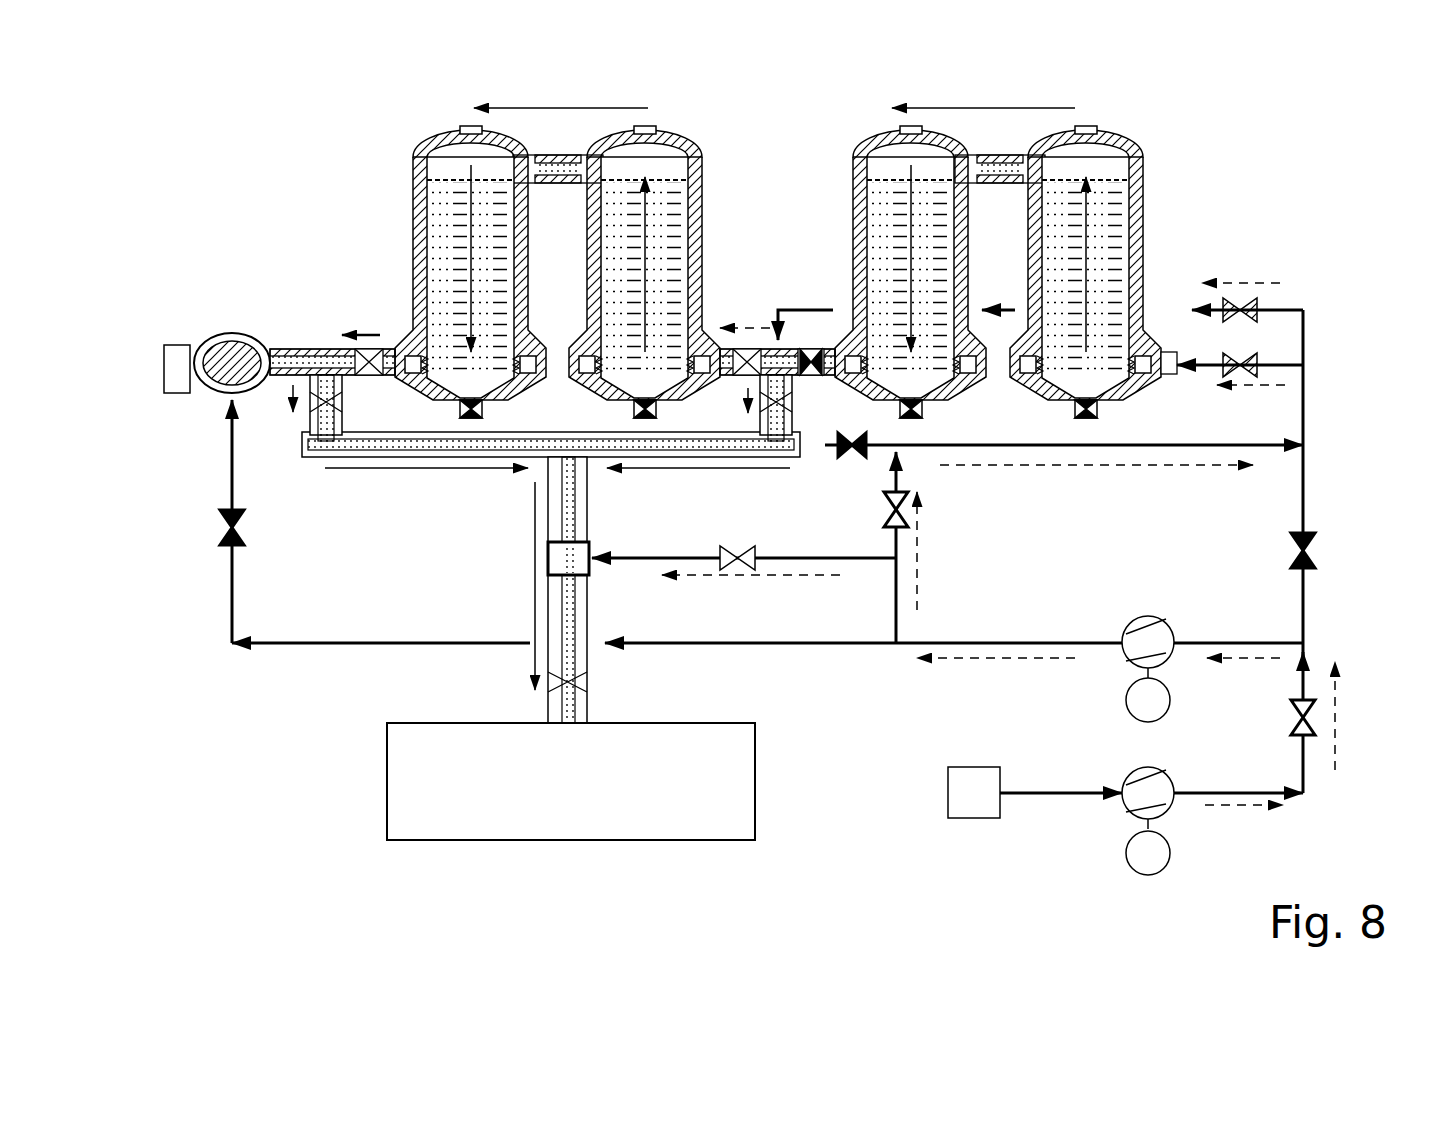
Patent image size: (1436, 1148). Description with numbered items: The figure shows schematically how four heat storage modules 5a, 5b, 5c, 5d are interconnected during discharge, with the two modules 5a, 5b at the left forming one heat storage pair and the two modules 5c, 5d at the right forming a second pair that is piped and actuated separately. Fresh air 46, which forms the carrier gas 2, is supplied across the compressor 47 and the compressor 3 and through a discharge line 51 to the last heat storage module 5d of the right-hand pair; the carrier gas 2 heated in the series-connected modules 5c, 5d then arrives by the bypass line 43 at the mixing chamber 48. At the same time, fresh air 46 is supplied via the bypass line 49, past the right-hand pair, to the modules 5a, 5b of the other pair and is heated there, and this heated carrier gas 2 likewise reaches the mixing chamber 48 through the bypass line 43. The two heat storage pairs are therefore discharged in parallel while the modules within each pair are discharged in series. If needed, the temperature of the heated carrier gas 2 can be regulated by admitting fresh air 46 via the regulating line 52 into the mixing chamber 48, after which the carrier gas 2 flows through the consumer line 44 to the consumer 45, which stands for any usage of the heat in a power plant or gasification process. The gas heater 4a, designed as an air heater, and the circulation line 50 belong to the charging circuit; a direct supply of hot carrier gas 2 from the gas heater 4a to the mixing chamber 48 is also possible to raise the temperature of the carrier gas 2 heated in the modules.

The carrier gas 2 is at (552, 107).
The compressor 3 is at (1130, 632).
The gas heater 4a is at (215, 336).
The heat storage module 5a is at (447, 205).
The heat storage module 5b is at (660, 186).
The heat storage module 5c is at (890, 208).
The heat storage module 5d is at (1102, 190).
The bypass line 43 is at (316, 460).
The consumer line 44 is at (548, 626).
The consumer 45 is at (425, 777).
The fresh air 46 is at (742, 325).
The further compressor 47 is at (1128, 778).
The mixing chamber 48 is at (590, 548).
The bypass line 49 is at (1290, 308).
The circulation line 50 is at (228, 620).
The discharge line 51 is at (1195, 374).
The regulating line 52 is at (748, 556).